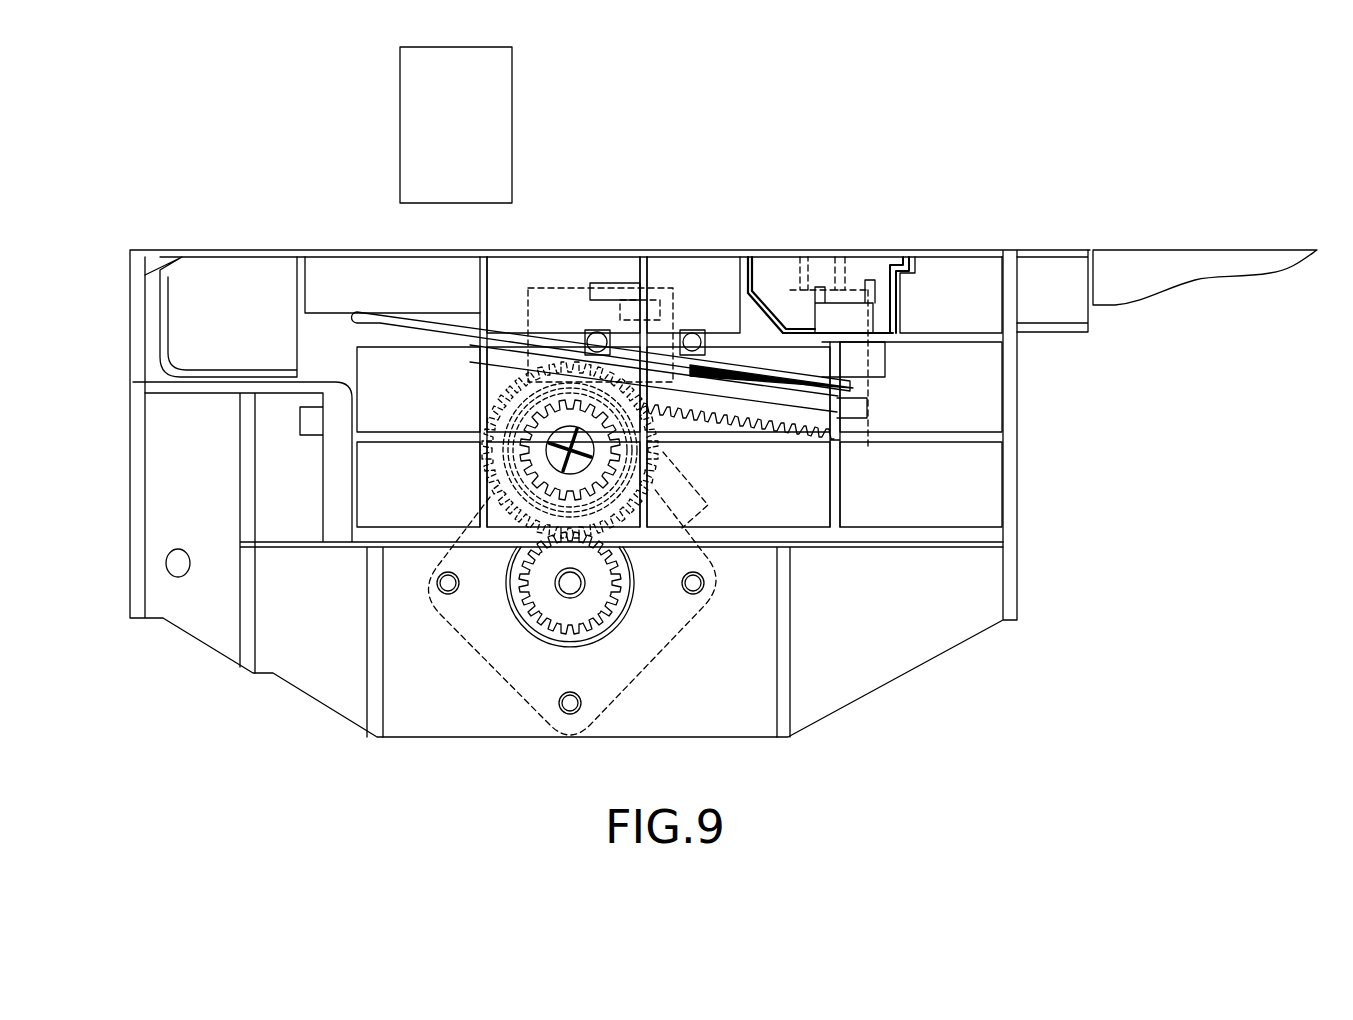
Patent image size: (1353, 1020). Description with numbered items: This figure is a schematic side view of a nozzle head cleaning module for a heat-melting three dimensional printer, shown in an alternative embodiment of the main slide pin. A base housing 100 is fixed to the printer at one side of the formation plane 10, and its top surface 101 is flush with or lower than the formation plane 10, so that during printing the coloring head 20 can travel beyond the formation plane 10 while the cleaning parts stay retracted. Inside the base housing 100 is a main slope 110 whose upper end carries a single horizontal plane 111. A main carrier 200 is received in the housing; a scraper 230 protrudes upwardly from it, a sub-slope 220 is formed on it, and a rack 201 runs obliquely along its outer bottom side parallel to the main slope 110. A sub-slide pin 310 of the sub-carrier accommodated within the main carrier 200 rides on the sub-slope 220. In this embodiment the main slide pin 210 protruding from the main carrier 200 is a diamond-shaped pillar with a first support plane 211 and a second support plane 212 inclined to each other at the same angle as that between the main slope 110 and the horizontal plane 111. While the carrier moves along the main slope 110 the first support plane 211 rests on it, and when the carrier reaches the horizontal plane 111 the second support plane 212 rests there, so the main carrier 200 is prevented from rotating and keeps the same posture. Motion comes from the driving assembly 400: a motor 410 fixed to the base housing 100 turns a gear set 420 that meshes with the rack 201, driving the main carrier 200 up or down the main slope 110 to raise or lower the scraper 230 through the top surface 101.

The formation plane 10 is at (1210, 250).
The coloring head 20 is at (412, 118).
The base housing 100 is at (982, 244).
The top surface 101 is at (905, 265).
The main slope 110 is at (540, 330).
The horizontal plane 111 is at (290, 300).
The main carrier 200 is at (873, 420).
The rack 201 is at (797, 478).
The main slide pin 210 is at (808, 352).
The first support plane 211 is at (705, 375).
The second support plane 212 is at (830, 397).
The sub-slope 220 is at (722, 320).
The scraper 230 is at (858, 272).
The sub-slide pin 310 is at (695, 333).
The driving assembly 400 is at (676, 650).
The motor 410 is at (637, 672).
The gear set 420 is at (663, 460).